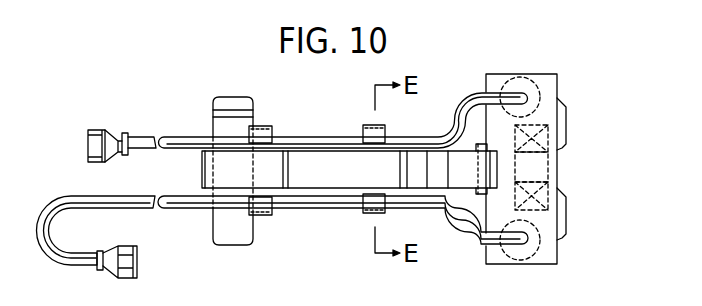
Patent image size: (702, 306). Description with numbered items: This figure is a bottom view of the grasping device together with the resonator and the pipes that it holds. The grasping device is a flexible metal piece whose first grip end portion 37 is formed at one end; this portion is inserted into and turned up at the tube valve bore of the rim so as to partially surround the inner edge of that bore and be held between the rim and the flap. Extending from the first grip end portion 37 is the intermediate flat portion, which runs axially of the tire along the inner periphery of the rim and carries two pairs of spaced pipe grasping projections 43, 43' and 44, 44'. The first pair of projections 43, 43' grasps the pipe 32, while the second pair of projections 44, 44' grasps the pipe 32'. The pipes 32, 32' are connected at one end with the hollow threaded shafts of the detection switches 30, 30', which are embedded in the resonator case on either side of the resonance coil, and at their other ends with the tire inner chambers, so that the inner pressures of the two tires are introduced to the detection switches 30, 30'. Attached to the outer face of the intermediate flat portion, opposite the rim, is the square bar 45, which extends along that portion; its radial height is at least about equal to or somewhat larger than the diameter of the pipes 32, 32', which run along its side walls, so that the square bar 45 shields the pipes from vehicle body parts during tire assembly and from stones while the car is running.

The detection switch 30 is at (526, 151).
The detection switch 30' is at (557, 225).
The pipe 32 is at (308, 127).
The pipe 32' is at (283, 237).
The first grip end portion 37 is at (226, 98).
The pipe grasping projection 43 is at (397, 122).
The pipe grasping projection 43' is at (277, 115).
The pipe grasping projection 44 is at (359, 224).
The pipe grasping projection 44' is at (275, 227).
The square bar 45 is at (331, 157).